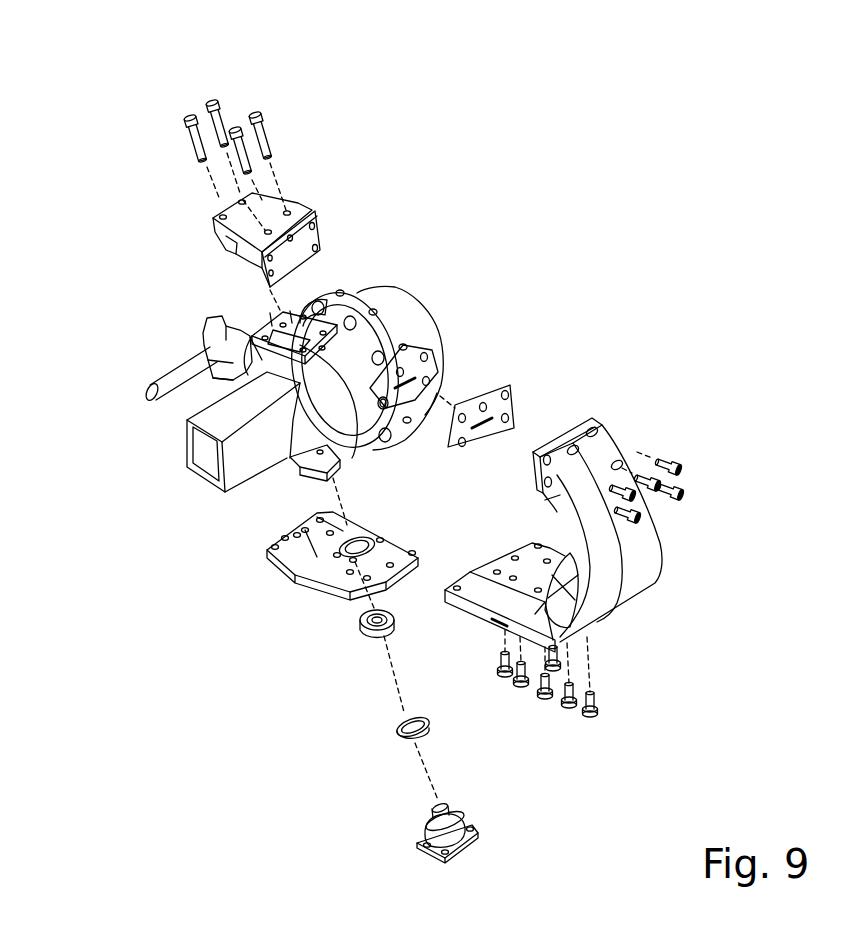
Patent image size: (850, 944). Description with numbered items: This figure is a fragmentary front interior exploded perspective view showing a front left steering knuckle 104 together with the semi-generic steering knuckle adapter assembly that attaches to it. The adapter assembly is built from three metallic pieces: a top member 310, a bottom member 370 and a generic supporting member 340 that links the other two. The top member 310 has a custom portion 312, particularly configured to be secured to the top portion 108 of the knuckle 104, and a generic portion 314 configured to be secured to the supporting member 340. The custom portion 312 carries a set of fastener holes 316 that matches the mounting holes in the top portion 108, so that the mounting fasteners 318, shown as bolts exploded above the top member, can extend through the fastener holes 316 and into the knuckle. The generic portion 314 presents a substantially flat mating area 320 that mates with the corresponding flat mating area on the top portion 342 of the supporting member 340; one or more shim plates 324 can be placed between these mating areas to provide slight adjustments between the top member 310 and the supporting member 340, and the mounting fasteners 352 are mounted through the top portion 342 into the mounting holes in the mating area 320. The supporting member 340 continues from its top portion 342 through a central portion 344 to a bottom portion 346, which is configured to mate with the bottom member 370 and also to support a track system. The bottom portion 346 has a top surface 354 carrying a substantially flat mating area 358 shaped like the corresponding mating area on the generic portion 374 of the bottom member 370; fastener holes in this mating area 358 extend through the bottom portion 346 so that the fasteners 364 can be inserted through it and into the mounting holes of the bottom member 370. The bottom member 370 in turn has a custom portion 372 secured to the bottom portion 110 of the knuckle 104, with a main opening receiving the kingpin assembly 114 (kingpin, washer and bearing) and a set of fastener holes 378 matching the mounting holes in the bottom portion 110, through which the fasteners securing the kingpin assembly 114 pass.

The steering knuckle 104 is at (350, 348).
The top portion of the steering knuckle 108 is at (250, 336).
The bottom portion of the steering knuckle 110 is at (298, 471).
The kingpin assembly 114 is at (353, 610).
The top member 310 is at (307, 191).
The custom portion of the top member 312 is at (238, 231).
The generic portion of the top member 314 is at (268, 278).
The fastener holes 316 is at (241, 201).
The mounting fasteners 318 is at (258, 90).
The mating area 320 is at (310, 239).
The shim plates 324 is at (430, 372).
The supporting member 340 is at (698, 627).
The top portion of the supporting member 342 is at (608, 448).
The central portion of the supporting member 344 is at (643, 568).
The bottom portion of the supporting member 346 is at (485, 593).
The mounting fasteners 352 is at (680, 461).
The top surface of the bottom portion 354 is at (475, 554).
The mating area 358 is at (522, 556).
The fasteners 364 is at (587, 733).
The bottom member 370 is at (247, 605).
The custom portion of the bottom member 372 is at (370, 534).
The generic portion of the bottom member 374 is at (320, 597).
The fastener holes 378 is at (320, 562).